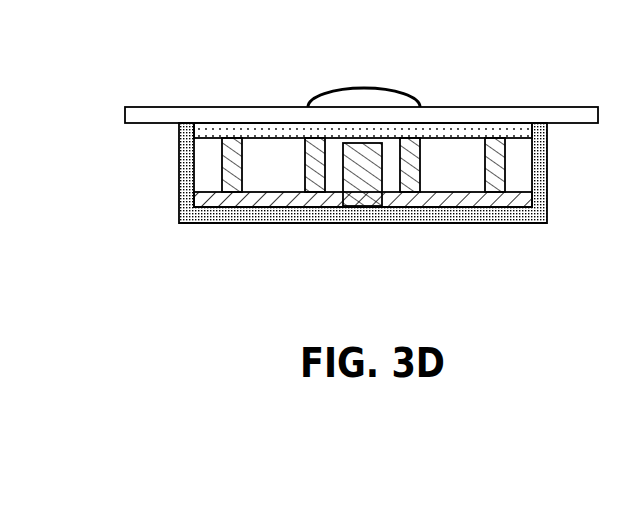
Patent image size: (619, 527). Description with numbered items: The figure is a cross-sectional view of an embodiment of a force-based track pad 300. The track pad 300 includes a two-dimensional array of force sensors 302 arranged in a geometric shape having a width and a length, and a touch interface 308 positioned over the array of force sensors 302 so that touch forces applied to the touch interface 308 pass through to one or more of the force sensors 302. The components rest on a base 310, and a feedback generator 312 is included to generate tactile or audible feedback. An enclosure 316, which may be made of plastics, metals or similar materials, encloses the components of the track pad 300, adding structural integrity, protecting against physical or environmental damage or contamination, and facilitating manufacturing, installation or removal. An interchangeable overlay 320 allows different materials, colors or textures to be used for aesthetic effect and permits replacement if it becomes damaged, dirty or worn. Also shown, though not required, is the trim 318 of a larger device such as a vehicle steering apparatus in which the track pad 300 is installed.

The force-based track pad 300 is at (476, 324).
The force sensors 302 is at (505, 164).
The touch interface 308 is at (280, 138).
The base 310 is at (463, 205).
The feedback generator 312 is at (363, 180).
The enclosure 316 is at (183, 168).
The trim 318 is at (232, 107).
The interchangeable overlay 320 is at (363, 88).